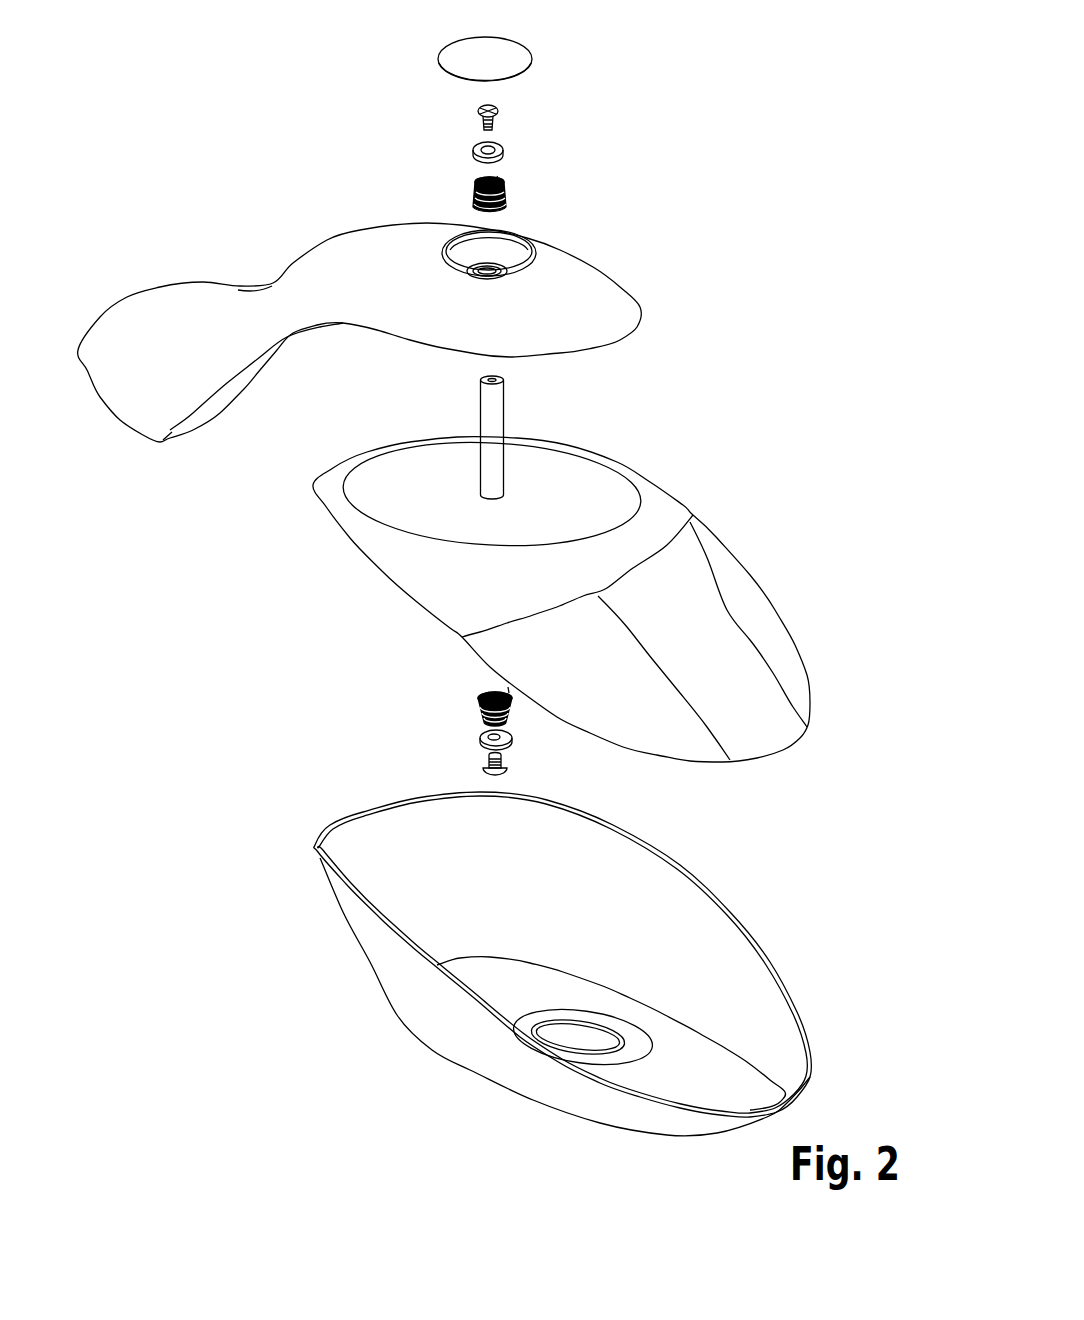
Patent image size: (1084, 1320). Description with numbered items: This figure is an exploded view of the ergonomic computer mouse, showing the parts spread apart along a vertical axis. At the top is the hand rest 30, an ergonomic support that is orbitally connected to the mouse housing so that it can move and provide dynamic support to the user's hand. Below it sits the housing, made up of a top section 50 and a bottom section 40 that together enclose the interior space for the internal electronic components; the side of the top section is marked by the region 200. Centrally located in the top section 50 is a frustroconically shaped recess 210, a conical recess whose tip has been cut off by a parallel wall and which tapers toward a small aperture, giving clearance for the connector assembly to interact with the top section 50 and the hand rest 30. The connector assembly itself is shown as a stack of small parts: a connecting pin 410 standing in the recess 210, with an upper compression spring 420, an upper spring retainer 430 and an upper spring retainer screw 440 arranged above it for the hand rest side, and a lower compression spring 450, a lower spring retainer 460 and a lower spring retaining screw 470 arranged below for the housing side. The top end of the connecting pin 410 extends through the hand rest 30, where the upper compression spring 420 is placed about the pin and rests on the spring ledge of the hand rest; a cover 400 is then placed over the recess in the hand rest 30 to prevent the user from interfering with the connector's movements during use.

The hand rest 30 is at (242, 237).
The bottom section 40 is at (320, 942).
The top section 50 is at (677, 468).
The side panel of body 200 is at (773, 572).
The frustroconically shaped recess 210 is at (367, 488).
The cover 400 is at (515, 60).
The connecting pin 410 is at (495, 413).
The upper compression spring 420 is at (507, 198).
The upper spring retainer 430 is at (503, 148).
The upper spring retainer screw 440 is at (498, 110).
The lower compression spring 450 is at (477, 703).
The lower spring retainer 460 is at (480, 736).
The lower spring retaining screw 470 is at (486, 774).